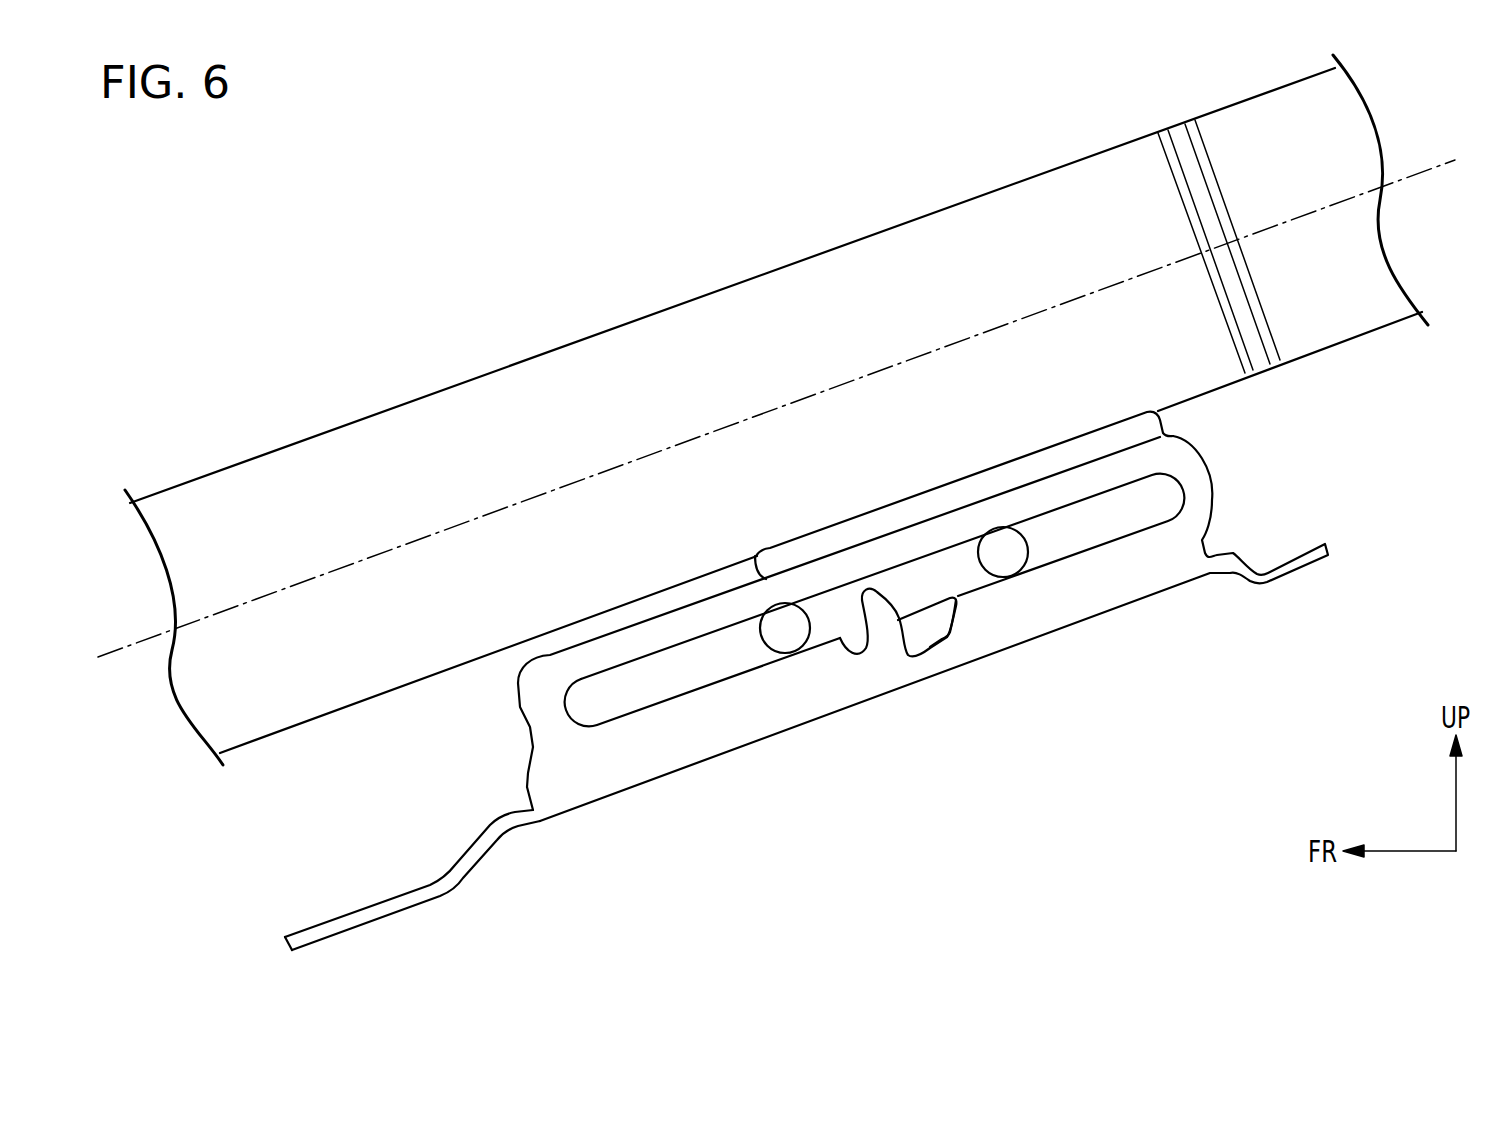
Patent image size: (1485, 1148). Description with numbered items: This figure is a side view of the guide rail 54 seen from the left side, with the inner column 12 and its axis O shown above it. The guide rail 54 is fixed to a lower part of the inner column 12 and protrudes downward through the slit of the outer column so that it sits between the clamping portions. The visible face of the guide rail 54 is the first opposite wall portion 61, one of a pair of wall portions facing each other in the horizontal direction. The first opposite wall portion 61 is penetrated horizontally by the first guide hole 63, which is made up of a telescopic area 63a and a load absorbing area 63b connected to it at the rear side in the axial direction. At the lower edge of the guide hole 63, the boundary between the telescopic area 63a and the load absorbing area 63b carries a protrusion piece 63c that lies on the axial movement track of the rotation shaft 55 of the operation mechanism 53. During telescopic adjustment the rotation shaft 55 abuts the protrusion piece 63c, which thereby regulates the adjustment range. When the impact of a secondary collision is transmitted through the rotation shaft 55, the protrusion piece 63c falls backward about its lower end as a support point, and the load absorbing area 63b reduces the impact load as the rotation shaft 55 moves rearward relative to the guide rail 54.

The inner column 12 is at (740, 303).
The axis O is at (1418, 170).
The guide rail 54 is at (1085, 623).
The first opposite wall portion 61 is at (1133, 558).
The first guide hole 63 is at (643, 660).
The telescopic area 63a is at (693, 688).
The load absorbing area 63b is at (967, 593).
The protrusion piece 63c is at (878, 588).
The rotation shaft 55 is at (982, 566).
The operation mechanism 53 is at (827, 692).